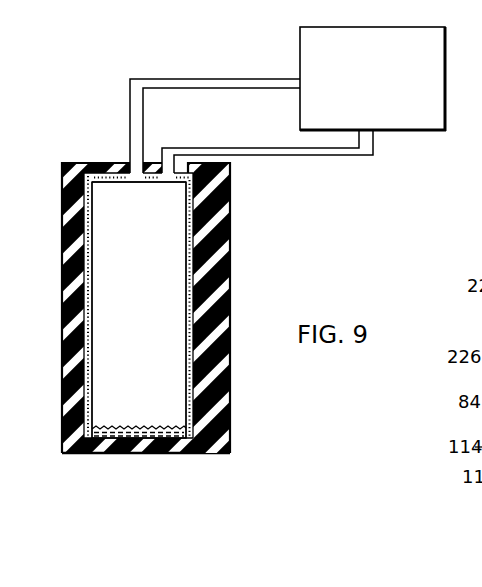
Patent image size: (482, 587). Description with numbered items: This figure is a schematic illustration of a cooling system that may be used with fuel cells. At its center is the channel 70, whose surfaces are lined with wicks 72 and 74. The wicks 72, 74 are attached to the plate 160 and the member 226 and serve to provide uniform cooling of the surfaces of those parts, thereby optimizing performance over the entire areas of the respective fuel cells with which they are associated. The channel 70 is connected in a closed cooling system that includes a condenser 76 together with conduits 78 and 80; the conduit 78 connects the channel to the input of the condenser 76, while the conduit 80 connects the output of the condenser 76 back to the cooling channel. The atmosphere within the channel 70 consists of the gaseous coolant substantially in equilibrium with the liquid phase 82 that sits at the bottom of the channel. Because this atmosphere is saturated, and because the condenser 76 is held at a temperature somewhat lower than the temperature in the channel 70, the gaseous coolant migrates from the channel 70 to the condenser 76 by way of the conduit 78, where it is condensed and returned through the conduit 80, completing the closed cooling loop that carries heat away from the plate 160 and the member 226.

The channel 70 is at (140, 343).
The wick 72 is at (90, 270).
The wick 74 is at (189, 249).
The condenser 76 is at (440, 91).
The conduit 78 is at (221, 80).
The conduit 80 is at (300, 153).
The liquid phase 82 is at (145, 438).
The plate 160 is at (83, 296).
The member 226 is at (222, 320).